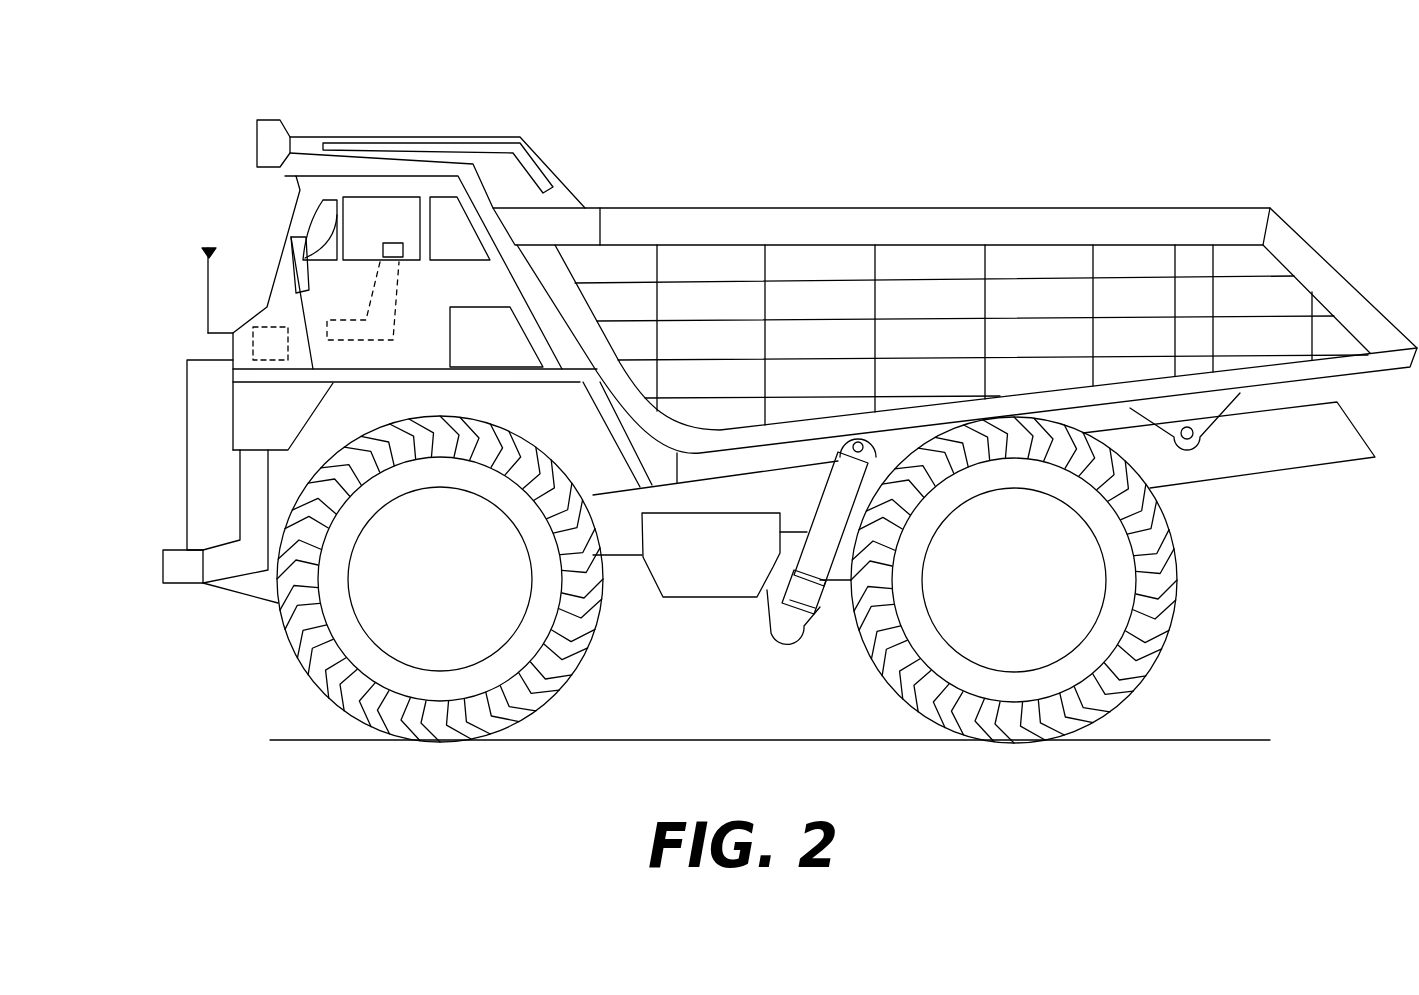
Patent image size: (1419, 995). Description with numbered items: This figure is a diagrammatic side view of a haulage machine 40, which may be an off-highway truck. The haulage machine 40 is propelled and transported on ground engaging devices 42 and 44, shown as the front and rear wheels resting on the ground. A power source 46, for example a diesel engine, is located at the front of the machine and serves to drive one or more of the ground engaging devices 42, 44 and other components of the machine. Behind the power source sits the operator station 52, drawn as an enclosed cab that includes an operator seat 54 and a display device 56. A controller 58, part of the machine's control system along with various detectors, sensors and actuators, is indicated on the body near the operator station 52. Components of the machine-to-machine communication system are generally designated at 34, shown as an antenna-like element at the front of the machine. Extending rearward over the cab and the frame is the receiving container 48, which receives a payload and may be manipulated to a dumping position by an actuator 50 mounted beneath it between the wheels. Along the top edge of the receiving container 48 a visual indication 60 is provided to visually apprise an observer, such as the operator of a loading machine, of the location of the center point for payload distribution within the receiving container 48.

The machine-to-machine communication system components 34 is at (208, 287).
The haulage machine 40 is at (535, 100).
The ground engaging device 42 is at (300, 650).
The ground engaging device 44 is at (1140, 665).
The power source 46 is at (150, 446).
The receiving container 48 is at (1083, 223).
The actuator 50 is at (768, 510).
The operator station 52 is at (260, 240).
The operator seat 54 is at (393, 243).
The display device 56 is at (303, 258).
The controller 58 is at (276, 362).
The visual indication 60 is at (885, 204).